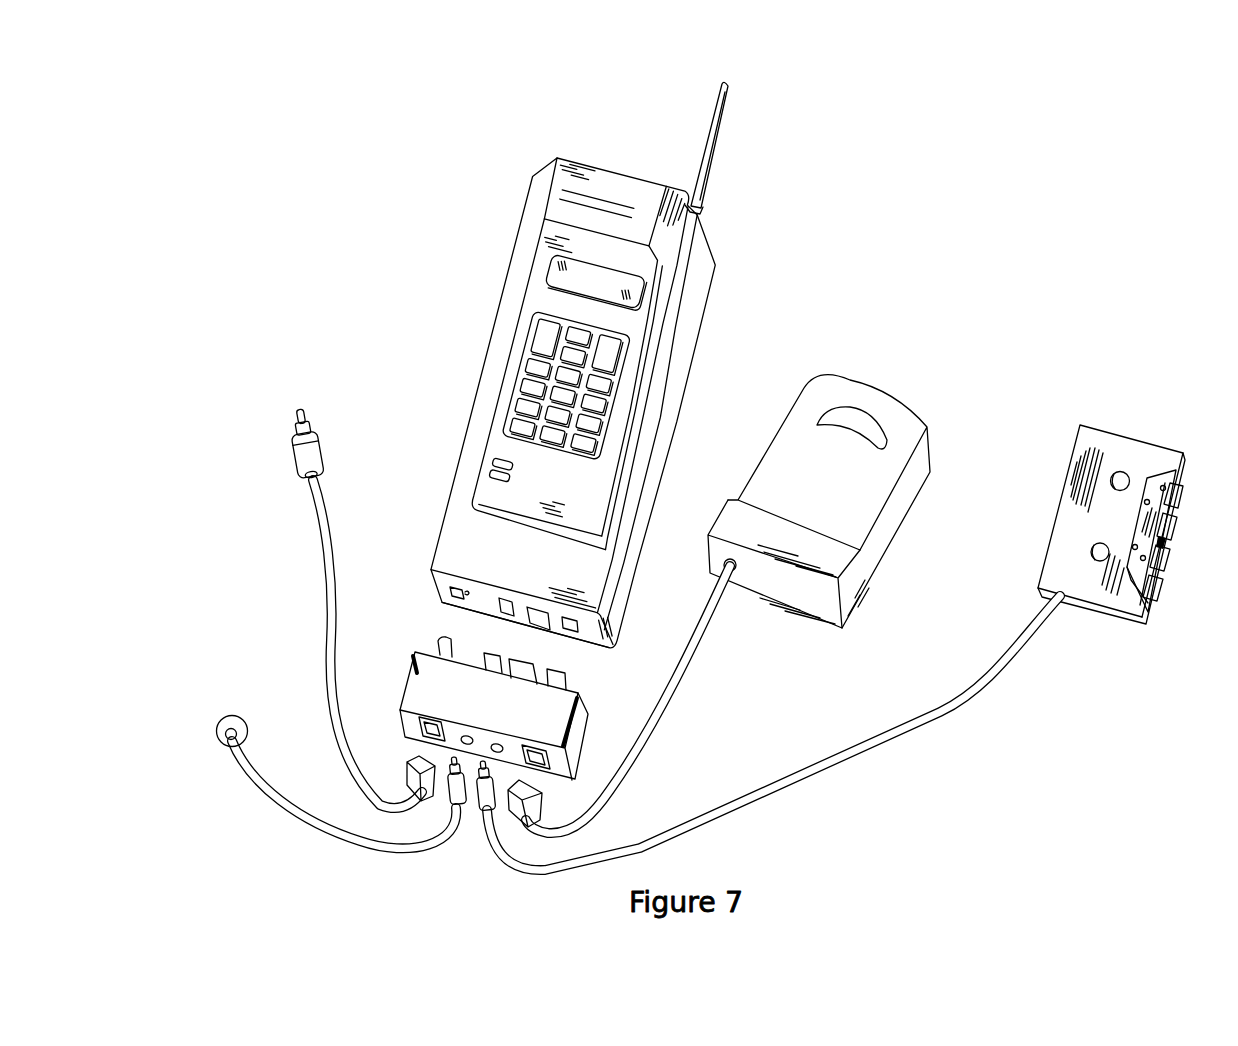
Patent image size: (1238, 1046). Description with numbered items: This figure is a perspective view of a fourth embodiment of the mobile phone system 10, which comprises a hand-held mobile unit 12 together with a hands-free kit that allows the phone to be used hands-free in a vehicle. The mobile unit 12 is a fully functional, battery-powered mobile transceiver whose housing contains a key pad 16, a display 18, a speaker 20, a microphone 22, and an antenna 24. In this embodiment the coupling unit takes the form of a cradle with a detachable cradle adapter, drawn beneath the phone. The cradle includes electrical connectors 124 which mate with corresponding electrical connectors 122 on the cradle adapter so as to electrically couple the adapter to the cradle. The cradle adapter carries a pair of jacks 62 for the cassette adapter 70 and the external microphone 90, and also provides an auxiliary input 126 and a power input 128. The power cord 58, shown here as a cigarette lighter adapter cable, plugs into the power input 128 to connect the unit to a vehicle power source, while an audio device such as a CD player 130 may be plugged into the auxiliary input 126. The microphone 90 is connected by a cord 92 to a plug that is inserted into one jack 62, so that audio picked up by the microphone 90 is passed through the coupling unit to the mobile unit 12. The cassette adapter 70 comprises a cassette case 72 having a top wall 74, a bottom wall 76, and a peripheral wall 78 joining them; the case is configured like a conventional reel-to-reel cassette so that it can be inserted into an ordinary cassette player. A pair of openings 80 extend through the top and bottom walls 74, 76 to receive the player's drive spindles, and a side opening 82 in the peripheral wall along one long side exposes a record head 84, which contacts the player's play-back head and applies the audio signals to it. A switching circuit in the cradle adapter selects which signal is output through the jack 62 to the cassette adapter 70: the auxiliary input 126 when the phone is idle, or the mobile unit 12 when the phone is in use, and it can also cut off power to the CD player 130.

The mobile phone system 10 is at (679, 476).
The mobile unit 12 is at (580, 365).
The key pad 16 is at (566, 385).
The display 18 is at (595, 282).
The speaker 20 is at (603, 202).
The microphone 22 is at (501, 470).
The antenna 24 is at (720, 130).
The power cord 58 is at (326, 560).
The jack 62 is at (492, 708).
The cassette adapter 70 is at (1100, 510).
The cassette case 72 is at (1100, 541).
The top wall 74 is at (1067, 511).
The bottom wall 76 is at (1120, 620).
The peripheral wall 78 is at (1084, 612).
The openings 80 is at (1093, 556).
The side opening 82 is at (1168, 525).
The record head 84 is at (1158, 548).
The microphone 90 is at (226, 748).
The cord 92 is at (271, 795).
The electrical connectors 122 is at (566, 668).
The electrical connectors 124 is at (538, 613).
The auxiliary input 126 is at (550, 764).
The power input 128 is at (421, 730).
The CD player 130 is at (844, 388).